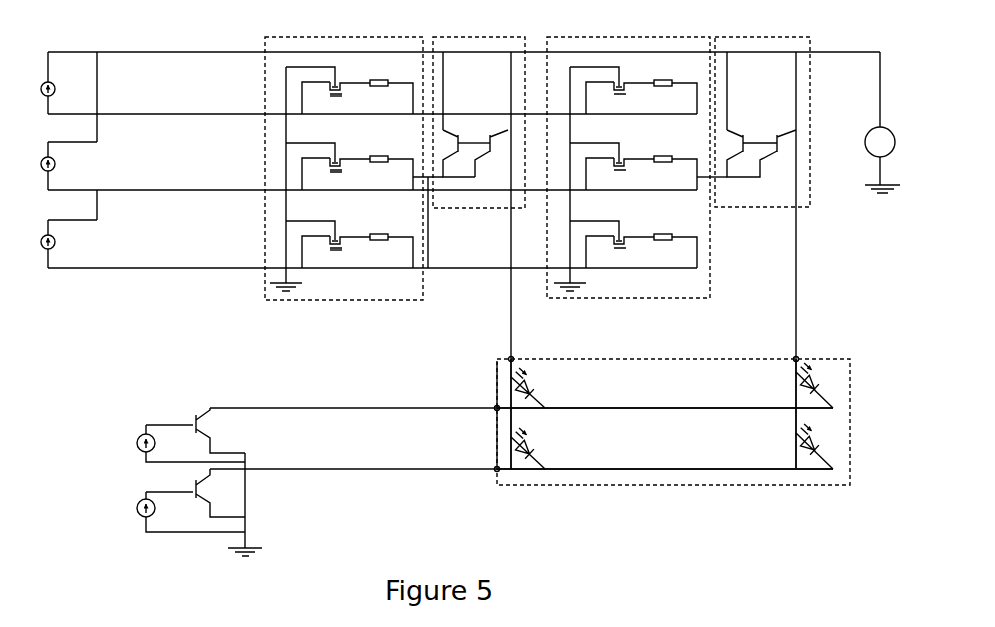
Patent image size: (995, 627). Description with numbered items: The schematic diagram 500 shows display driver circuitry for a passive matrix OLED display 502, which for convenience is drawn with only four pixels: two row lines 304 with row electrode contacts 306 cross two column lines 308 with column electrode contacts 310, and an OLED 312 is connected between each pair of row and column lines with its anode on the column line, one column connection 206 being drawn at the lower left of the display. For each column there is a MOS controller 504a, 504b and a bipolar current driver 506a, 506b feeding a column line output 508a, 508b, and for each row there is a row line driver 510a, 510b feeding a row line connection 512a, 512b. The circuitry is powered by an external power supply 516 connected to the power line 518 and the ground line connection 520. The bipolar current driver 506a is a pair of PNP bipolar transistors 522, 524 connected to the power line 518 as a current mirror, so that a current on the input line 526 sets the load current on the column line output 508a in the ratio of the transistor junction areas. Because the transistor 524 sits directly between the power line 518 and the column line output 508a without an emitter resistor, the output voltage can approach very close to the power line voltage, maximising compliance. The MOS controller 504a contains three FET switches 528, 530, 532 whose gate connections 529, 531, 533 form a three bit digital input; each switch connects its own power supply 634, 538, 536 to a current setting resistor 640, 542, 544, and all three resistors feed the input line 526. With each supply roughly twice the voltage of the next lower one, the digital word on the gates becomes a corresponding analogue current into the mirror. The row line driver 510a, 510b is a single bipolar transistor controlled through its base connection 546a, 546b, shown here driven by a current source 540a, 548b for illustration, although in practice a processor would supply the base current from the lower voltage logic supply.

The circuit 500 is at (70, 564).
The power line 518 is at (221, 50).
The DC voltage source 1.7V 634 is at (56, 84).
The power supply 538 is at (58, 163).
The power supply 536 is at (58, 241).
The MOS controller 504a is at (354, 183).
The MOS controller 504b is at (650, 301).
The FET switch 528 is at (343, 80).
The FET switch 530 is at (343, 156).
The FET switch 532 is at (343, 234).
The resistor 640 is at (383, 81).
The current setting resistor 542 is at (383, 157).
The current setting resistor 544 is at (383, 235).
The gate connection 529 is at (334, 96).
The gate connection 531 is at (334, 172).
The gate connection 533 is at (334, 250).
The input line 526 is at (437, 238).
The bipolar current driver 506a is at (479, 138).
The bipolar current driver 506b is at (773, 209).
The PNP bipolar transistor 522 is at (452, 132).
The PNP bipolar transistor 524 is at (497, 132).
The column line output 508a is at (513, 332).
The column line output 508b is at (798, 272).
The external power supply 516 is at (869, 127).
The ground line connection 520 is at (873, 185).
The current source I1 540a is at (136, 438).
The current source 548b is at (136, 505).
The base connection 546a is at (166, 423).
The base connection 546b is at (166, 490).
The row line driver 510a is at (200, 412).
The row line driver 510b is at (205, 507).
The row line connection 512a is at (297, 408).
The row line connection 512b is at (297, 469).
The passive matrix OLED display 502 is at (670, 430).
The row line 304 is at (632, 407).
The row electrode contact 306 is at (495, 405).
The column electrode contact 310 is at (514, 357).
The OLED 312 is at (537, 388).
The column line 308 is at (799, 471).
The column line 206 is at (509, 477).